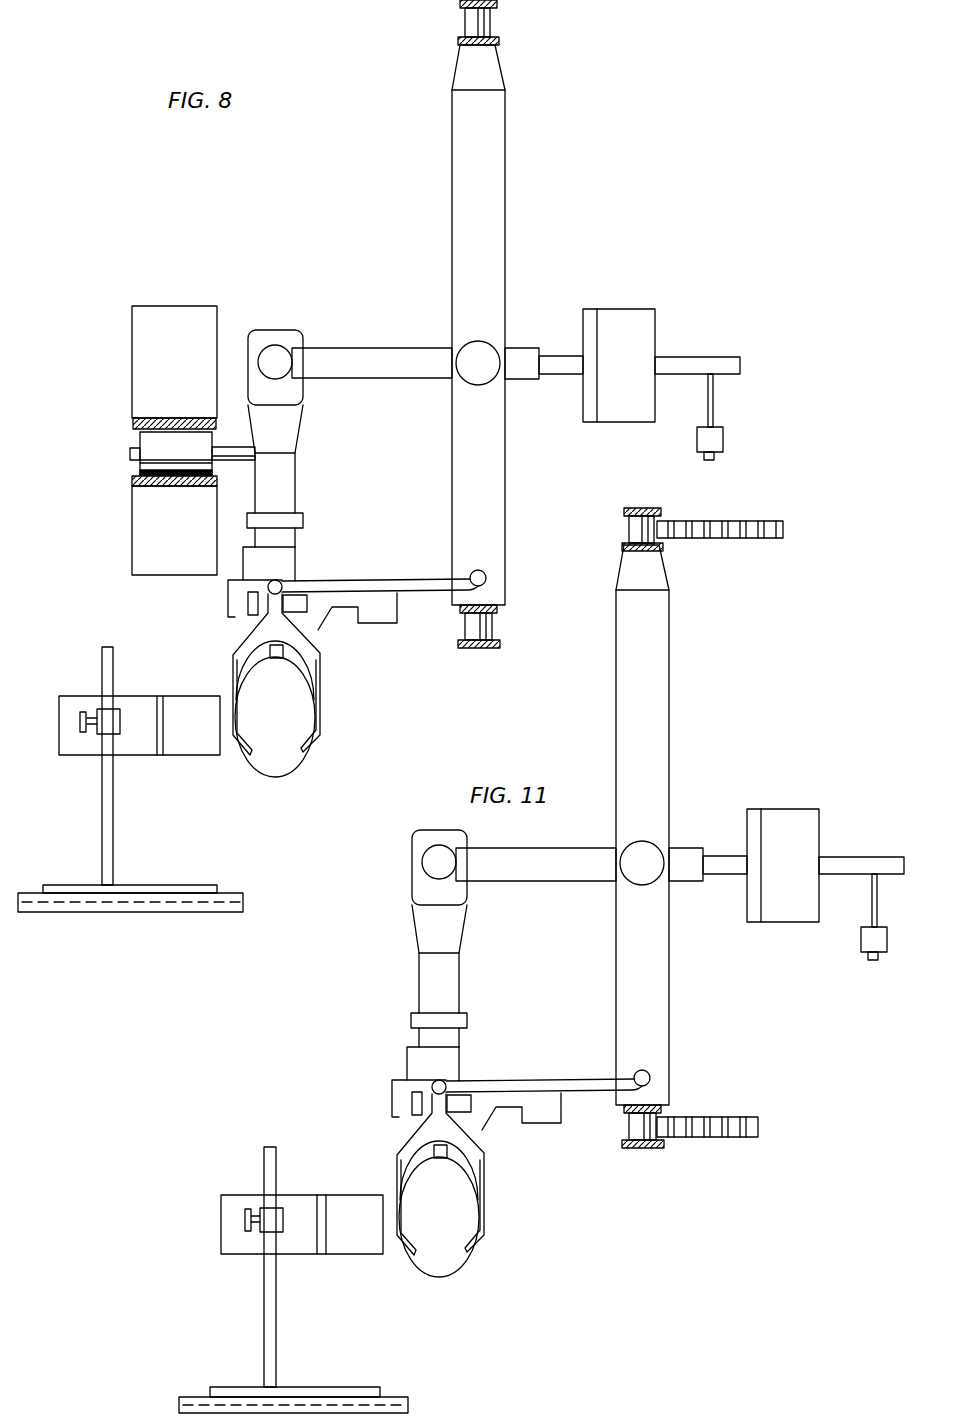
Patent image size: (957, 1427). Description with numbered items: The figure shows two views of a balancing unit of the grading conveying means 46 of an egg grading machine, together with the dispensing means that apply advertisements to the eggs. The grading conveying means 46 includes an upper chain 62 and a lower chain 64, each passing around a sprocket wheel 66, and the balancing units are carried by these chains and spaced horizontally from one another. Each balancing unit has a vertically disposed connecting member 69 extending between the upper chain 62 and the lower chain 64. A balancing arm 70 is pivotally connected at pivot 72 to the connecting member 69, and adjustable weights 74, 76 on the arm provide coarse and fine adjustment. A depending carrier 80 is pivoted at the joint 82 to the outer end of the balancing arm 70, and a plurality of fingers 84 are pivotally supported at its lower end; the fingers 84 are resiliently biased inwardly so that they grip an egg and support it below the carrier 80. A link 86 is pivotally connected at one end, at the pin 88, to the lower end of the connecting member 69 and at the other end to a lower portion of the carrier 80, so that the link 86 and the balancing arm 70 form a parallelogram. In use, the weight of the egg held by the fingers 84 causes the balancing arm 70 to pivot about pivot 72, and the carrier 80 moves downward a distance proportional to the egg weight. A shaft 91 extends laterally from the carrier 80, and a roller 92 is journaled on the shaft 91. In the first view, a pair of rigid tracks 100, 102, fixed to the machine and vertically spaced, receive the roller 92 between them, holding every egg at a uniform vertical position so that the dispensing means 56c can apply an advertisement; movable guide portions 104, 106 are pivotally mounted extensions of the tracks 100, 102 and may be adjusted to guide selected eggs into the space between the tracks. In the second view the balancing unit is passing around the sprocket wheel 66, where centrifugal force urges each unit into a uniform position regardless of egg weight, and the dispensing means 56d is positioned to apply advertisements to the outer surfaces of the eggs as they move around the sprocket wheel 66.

In FIG. 8, the grading conveying means 46 is at (440, 27).
In FIG. 8, the upper chain 62 is at (498, 7).
In FIG. 8, the lower chain 64 is at (500, 643).
In FIG. 11, the sprocket wheel 66 is at (740, 540).
In FIG. 8, the connecting member 69 is at (492, 183).
In FIG. 8, the balancing arm 70 is at (376, 352).
In FIG. 8, the pivot 72 is at (497, 345).
In FIG. 8, the adjustable weight 74 is at (636, 316).
In FIG. 8, the adjustable weight 76 is at (723, 443).
In FIG. 8, the carrier 80 is at (285, 485).
In FIG. 8, the pivot joint 82 is at (278, 345).
In FIG. 8, the fingers 84 is at (260, 636).
In FIG. 8, the link 86 is at (418, 580).
In FIG. 8, the pivot pin 88 is at (487, 573).
In FIG. 8, the shaft 91 is at (235, 455).
In FIG. 8, the roller 92 is at (150, 441).
In FIG. 8, the rigid track 100 is at (132, 480).
In FIG. 8, the rigid track 102 is at (133, 423).
In FIG. 8, the movable guide portion 104 is at (145, 543).
In FIG. 8, the movable guide portion 106 is at (183, 322).
In FIG. 8, the dispensing means 56c is at (68, 668).
In FIG. 11, the dispensing means 56d is at (237, 1180).